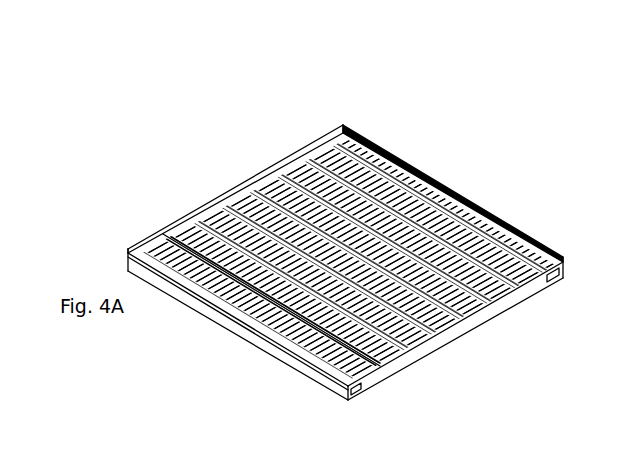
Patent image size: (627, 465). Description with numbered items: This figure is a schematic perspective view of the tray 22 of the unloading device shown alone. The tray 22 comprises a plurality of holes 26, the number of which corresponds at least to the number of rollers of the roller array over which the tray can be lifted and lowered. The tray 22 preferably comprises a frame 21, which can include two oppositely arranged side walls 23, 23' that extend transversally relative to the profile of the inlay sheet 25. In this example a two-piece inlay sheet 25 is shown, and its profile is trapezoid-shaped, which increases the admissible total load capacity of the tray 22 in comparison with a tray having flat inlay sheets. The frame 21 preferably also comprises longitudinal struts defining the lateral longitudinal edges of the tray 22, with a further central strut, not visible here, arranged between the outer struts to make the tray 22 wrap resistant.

The frame 21 is at (229, 325).
The tray 22 is at (189, 180).
The side wall 23 is at (235, 170).
The side wall 23' is at (461, 328).
The inlay sheet 25 is at (453, 181).
The holes 26 is at (312, 368).